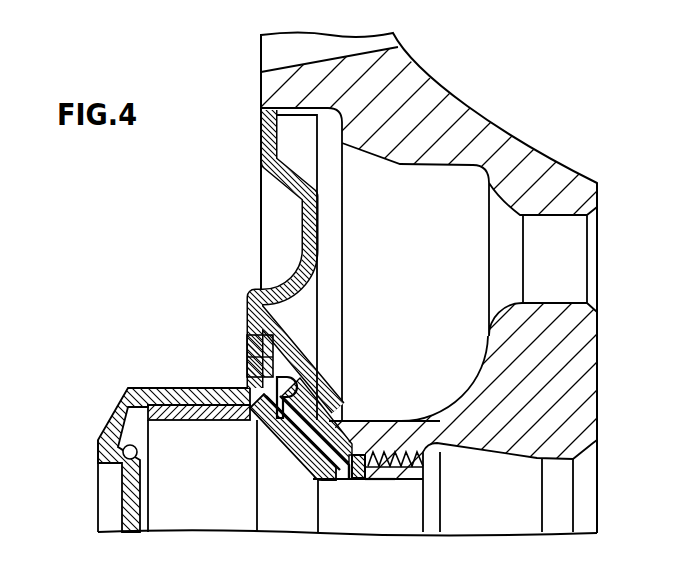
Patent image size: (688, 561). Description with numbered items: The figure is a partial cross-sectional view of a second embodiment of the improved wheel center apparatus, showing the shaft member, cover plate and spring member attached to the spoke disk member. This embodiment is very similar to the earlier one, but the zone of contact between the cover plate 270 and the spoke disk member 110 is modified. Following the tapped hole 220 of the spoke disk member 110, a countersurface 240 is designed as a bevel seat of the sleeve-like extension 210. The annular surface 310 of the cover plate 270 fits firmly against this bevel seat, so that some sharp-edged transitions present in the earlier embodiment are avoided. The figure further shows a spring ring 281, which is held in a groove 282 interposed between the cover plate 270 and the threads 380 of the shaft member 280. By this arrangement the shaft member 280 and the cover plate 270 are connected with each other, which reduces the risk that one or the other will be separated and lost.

The spoke disk member 110 is at (490, 423).
The sleeve-like extension 210 is at (397, 432).
The tapped hole 220 is at (424, 456).
The countersurface 240 is at (340, 424).
The cover plate 270 is at (300, 392).
The shaft member 280 is at (194, 432).
The spring ring 281 is at (374, 480).
The groove 282 is at (354, 480).
The annular surface 310 is at (312, 458).
The threads 380 is at (410, 476).